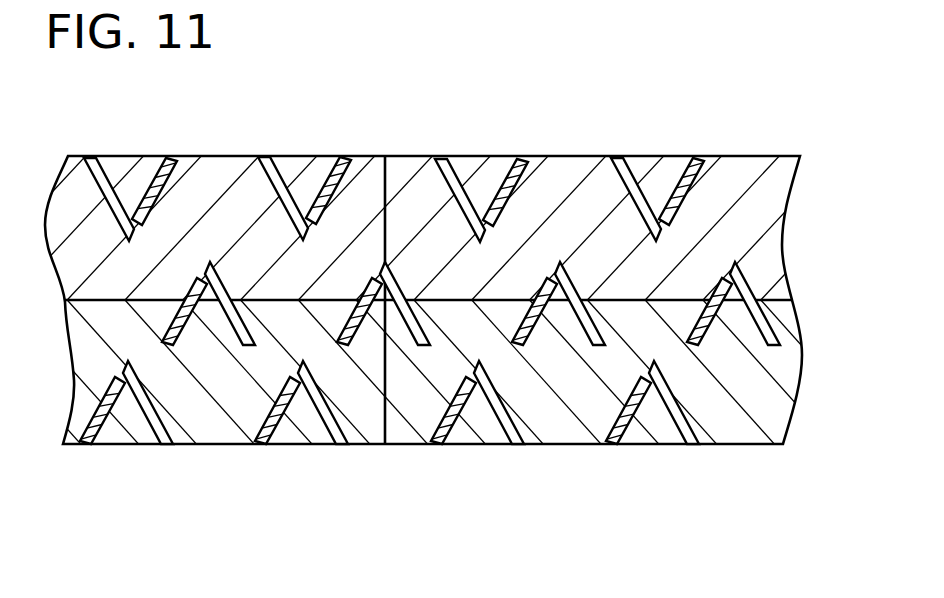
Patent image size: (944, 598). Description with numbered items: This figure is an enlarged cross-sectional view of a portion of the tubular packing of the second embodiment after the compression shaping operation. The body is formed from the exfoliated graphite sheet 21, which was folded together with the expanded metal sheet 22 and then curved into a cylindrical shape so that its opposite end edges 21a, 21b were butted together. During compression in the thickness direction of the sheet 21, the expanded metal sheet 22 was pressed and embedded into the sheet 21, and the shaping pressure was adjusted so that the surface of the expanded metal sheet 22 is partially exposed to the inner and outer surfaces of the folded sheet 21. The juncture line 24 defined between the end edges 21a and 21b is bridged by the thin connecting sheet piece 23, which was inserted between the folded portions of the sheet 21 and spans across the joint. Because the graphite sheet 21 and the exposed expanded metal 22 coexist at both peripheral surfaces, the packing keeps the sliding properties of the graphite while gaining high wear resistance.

The exfoliated graphite sheet 21 is at (750, 175).
The end edge of the sheet 21a is at (385, 360).
The end edge of the sheet 21b is at (385, 402).
The expanded metal sheet 22 is at (280, 187).
The connecting sheet piece 23 is at (208, 262).
The juncture line 24 is at (385, 445).